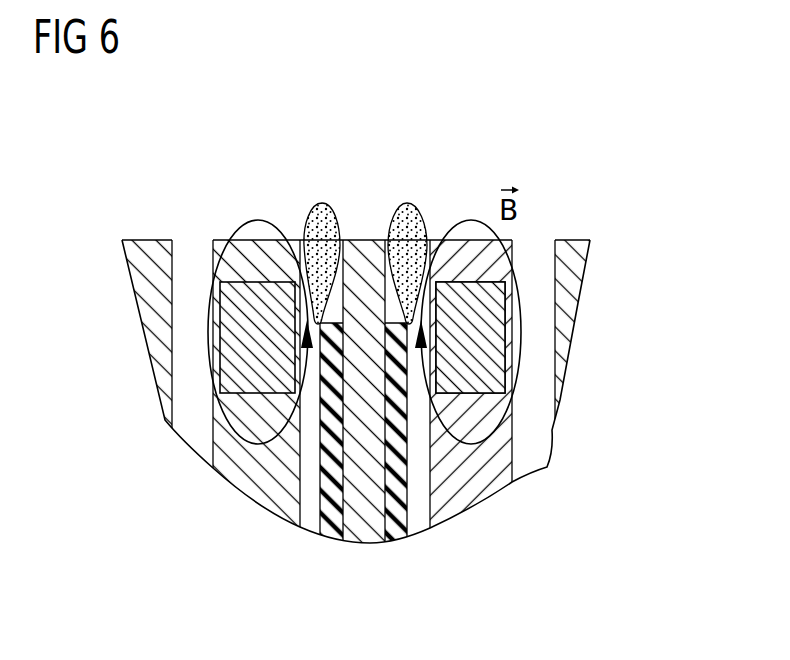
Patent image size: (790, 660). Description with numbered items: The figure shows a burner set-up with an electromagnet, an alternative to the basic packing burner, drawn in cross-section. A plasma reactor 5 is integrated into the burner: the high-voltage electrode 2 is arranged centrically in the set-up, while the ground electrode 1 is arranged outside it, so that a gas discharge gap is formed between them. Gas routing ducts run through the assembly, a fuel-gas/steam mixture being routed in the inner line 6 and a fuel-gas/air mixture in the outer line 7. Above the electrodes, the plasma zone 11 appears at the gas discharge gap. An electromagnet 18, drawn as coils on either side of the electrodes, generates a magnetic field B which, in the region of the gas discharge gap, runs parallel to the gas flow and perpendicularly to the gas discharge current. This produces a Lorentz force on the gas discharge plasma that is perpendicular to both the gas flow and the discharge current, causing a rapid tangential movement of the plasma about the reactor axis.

The ground electrode 1 is at (253, 486).
The high-voltage electrode 2 is at (362, 522).
The plasma reactor 5 is at (389, 160).
The inner line 6 is at (413, 523).
The outer line 7 is at (527, 465).
The plasma zone 11 is at (317, 223).
The electromagnet 18 is at (490, 338).